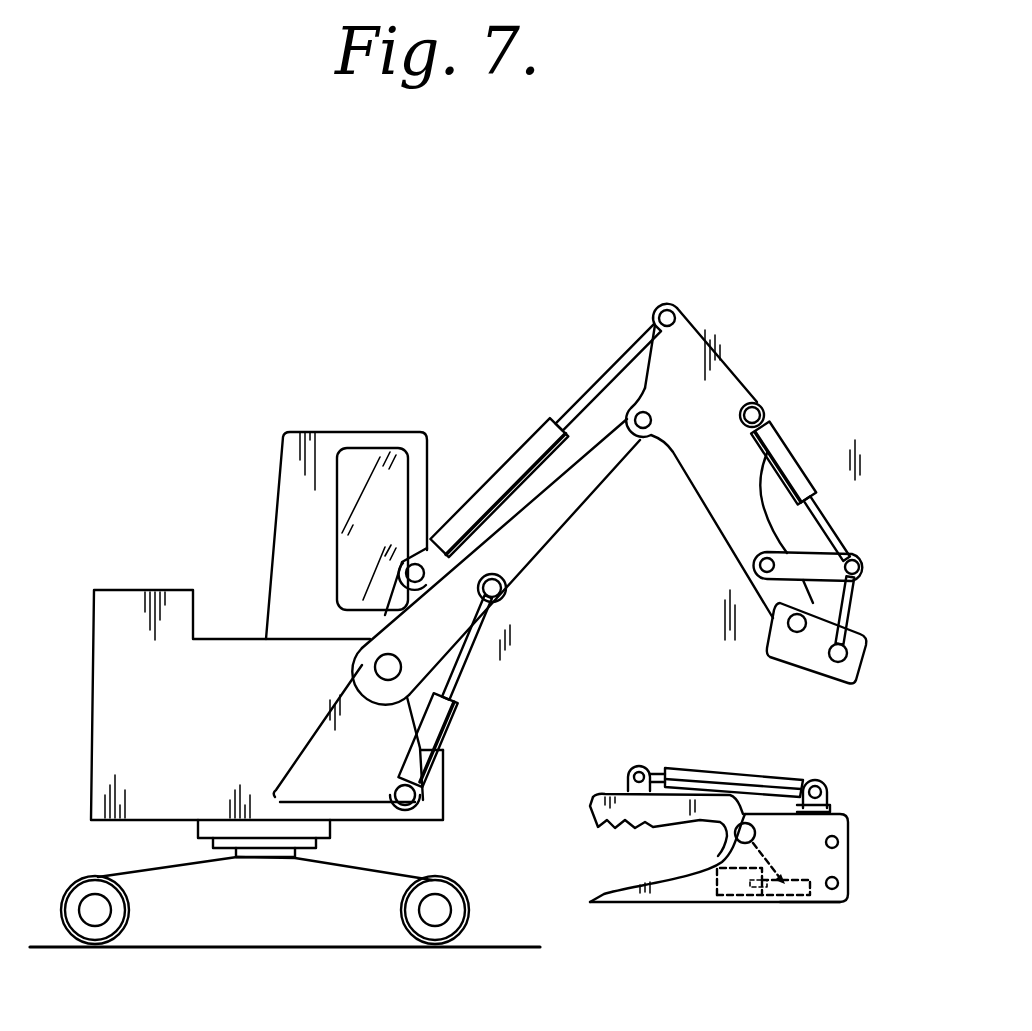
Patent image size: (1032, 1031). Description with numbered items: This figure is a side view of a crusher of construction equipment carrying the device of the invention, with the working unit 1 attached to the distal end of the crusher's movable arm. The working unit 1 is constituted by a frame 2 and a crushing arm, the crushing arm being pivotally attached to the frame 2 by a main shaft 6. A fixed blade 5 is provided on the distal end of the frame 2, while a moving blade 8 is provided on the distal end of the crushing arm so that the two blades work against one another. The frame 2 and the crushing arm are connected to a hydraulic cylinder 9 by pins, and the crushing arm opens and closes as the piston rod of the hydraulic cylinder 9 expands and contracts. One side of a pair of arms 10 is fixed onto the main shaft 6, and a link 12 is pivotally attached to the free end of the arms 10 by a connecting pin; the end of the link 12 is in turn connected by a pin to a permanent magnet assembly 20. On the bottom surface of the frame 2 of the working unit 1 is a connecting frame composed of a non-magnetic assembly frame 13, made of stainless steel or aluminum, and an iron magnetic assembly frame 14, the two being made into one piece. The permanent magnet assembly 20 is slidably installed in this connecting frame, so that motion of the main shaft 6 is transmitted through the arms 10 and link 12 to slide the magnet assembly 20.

The working unit 1 is at (615, 851).
The frame 2 is at (668, 898).
The fixed blade 5 is at (603, 903).
The main shaft 6 is at (742, 833).
The moving blade 8 is at (597, 797).
The hydraulic cylinder 9 is at (702, 778).
The pair of arms 10 is at (757, 846).
The link 12 is at (782, 908).
The non-magnetic assembly frame 13 is at (800, 900).
The magnetic assembly frame 14 is at (730, 906).
The permanent magnet assembly 20 is at (727, 880).